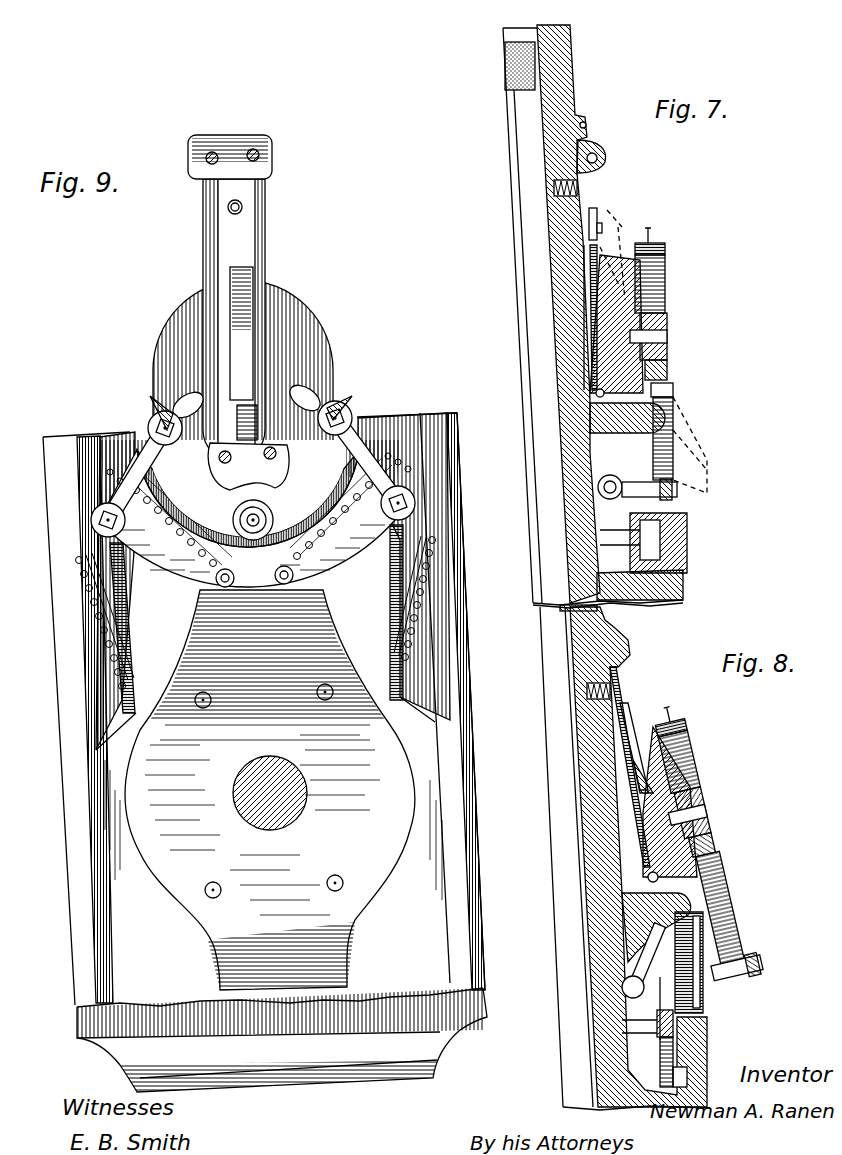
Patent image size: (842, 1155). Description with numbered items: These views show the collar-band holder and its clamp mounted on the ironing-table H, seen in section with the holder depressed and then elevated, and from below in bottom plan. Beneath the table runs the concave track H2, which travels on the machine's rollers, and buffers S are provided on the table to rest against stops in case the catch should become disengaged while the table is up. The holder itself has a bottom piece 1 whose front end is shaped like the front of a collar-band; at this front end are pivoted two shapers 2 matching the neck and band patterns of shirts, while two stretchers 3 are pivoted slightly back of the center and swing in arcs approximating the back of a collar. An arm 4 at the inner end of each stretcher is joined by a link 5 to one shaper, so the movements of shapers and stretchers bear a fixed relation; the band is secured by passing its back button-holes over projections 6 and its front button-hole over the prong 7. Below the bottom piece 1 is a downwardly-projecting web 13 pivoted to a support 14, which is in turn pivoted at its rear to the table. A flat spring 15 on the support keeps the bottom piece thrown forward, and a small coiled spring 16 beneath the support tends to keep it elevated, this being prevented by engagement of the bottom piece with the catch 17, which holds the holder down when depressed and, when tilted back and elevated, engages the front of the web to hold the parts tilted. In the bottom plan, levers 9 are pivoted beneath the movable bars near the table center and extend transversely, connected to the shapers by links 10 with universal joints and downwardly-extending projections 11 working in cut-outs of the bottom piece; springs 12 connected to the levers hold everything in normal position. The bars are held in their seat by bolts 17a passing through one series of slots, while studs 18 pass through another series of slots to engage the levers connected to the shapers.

In FIG. 9, the bottom piece 1 is at (248, 408).
In FIG. 7, the bottom piece 1 is at (666, 254).
In FIG. 9, the shapers 2 is at (150, 400).
In FIG. 7, the shapers 2 is at (674, 418).
In FIG. 8, the shapers 2 is at (720, 907).
In FIG. 7, the stretchers 3 is at (666, 284).
In FIG. 8, the stretchers 3 is at (676, 749).
In FIG. 7, the arm 4 is at (668, 352).
In FIG. 8, the arm 4 is at (687, 814).
In FIG. 7, the link 5 is at (670, 375).
In FIG. 8, the link 5 is at (702, 845).
In FIG. 7, the projections 6 is at (652, 236).
In FIG. 7, the prong 7 is at (680, 505).
In FIG. 8, the prong 7 is at (737, 968).
In FIG. 9, the levers 9 is at (247, 518).
In FIG. 7, the levers 9 is at (643, 543).
In FIG. 8, the levers 9 is at (712, 1015).
In FIG. 9, the links 10 is at (253, 458).
In FIG. 8, the links 10 is at (644, 960).
In FIG. 9, the downwardly-extending projections 11 is at (163, 424).
In FIG. 7, the downwardly-extending projections 11 is at (609, 481).
In FIG. 9, the springs 12 is at (132, 633).
In FIG. 8, the springs 12 is at (660, 1060).
In FIG. 7, the web 13 is at (616, 324).
In FIG. 8, the web 13 is at (670, 802).
In FIG. 9, the support 14 is at (272, 352).
In FIG. 7, the support 14 is at (597, 330).
In FIG. 8, the support 14 is at (643, 850).
In FIG. 9, the flat spring 15 is at (243, 353).
In FIG. 7, the flat spring 15 is at (598, 222).
In FIG. 8, the flat spring 15 is at (640, 740).
In FIG. 7, the coiled spring 16 is at (554, 188).
In FIG. 8, the coiled spring 16 is at (587, 691).
In FIG. 7, the catch 17 is at (674, 397).
In FIG. 9, the bolts 17a is at (90, 597).
In FIG. 9, the studs 18 is at (270, 765).
In FIG. 9, the ironing-table H is at (397, 935).
In FIG. 7, the ironing-table H is at (706, 564).
In FIG. 8, the ironing-table H is at (590, 662).
In FIG. 7, the concave track H2 is at (512, 142).
In FIG. 8, the concave track H2 is at (555, 782).
In FIG. 7, the buffers S is at (503, 60).